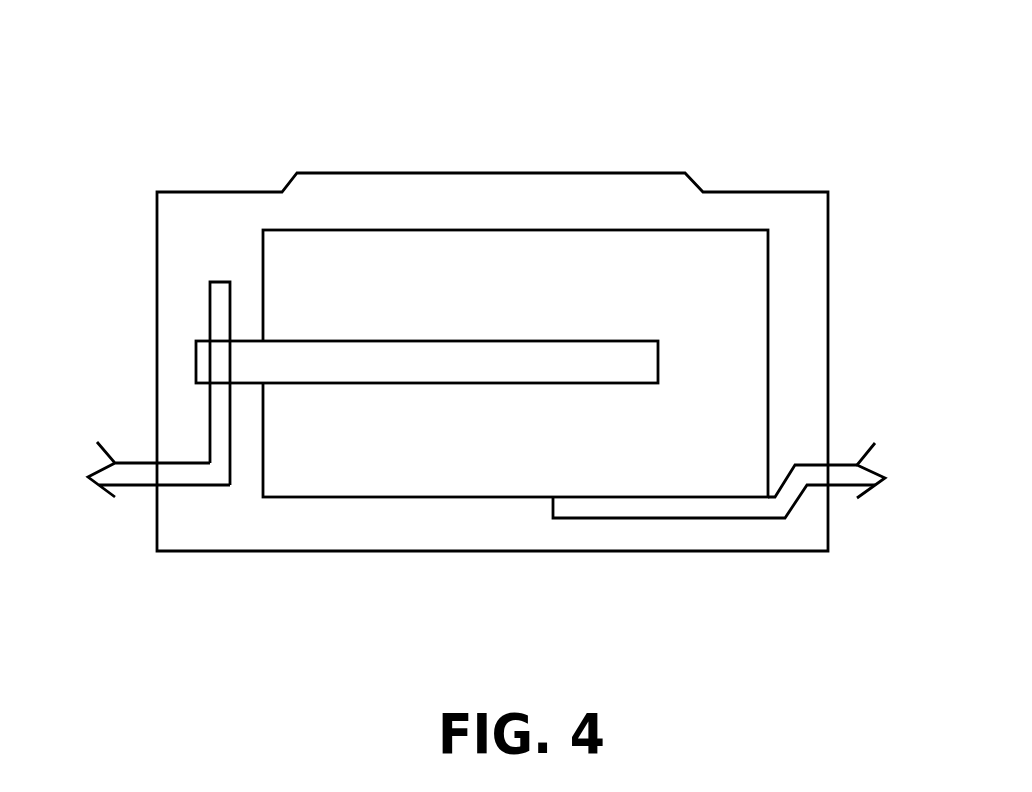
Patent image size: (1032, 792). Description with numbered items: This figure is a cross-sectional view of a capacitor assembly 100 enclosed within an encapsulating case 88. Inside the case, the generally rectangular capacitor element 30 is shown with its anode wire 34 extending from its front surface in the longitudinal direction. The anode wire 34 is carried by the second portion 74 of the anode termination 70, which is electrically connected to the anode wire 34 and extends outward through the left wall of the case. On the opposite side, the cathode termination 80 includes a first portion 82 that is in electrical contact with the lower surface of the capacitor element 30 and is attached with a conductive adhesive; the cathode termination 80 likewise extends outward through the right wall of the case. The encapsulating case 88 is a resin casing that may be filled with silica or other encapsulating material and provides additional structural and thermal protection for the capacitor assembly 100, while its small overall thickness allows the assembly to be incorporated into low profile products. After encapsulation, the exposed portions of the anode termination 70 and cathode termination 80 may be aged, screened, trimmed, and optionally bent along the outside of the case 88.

The capacitor assembly 100 is at (373, 110).
The encapsulating case 88 is at (812, 218).
The capacitor element 30 is at (695, 260).
The anode wire 34 is at (505, 362).
The second portion 74 is at (210, 407).
The anode termination 70 is at (110, 464).
The first portion 82 is at (710, 507).
The cathode termination 80 is at (842, 460).